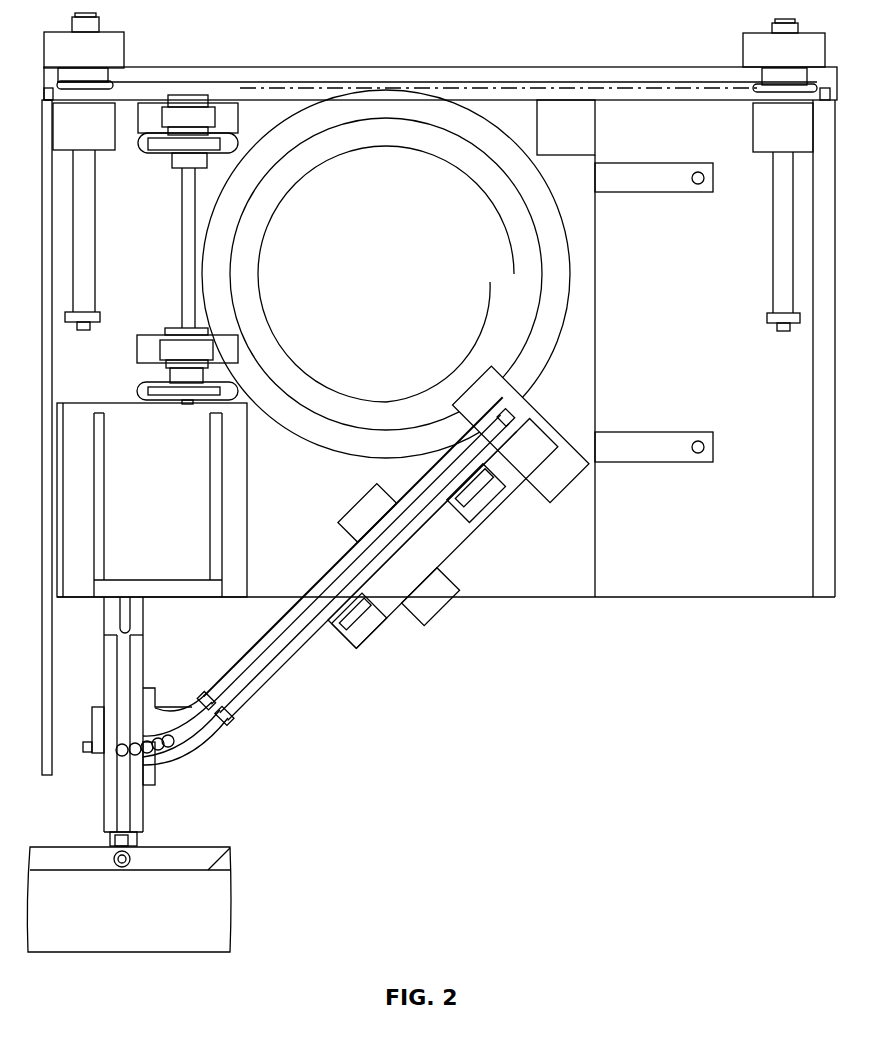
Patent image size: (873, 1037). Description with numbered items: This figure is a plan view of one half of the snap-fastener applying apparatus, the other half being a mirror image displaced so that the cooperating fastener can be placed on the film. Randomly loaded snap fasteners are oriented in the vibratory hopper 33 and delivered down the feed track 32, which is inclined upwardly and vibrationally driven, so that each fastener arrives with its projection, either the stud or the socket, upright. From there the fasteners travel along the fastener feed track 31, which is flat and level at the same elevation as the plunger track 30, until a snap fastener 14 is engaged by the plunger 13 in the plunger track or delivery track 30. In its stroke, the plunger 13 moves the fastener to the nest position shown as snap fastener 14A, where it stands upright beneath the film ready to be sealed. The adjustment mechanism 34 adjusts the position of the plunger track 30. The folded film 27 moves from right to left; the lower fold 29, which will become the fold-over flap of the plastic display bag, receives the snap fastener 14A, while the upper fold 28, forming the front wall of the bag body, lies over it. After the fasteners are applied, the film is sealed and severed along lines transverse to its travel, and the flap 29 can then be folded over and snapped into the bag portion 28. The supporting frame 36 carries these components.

The plunger 13 is at (122, 668).
The snap fastener 14 is at (116, 752).
The snap fastener position 14A is at (118, 851).
The folded film 27 is at (234, 895).
The upper fold 28 is at (236, 852).
The lower fold 29 is at (182, 846).
The plunger track 30 is at (128, 810).
The fastener feed track 31 is at (198, 735).
The feed track 32 is at (285, 650).
The vibratory hopper 33 is at (433, 96).
The adjustment mechanism 34 is at (220, 143).
The frame 36 is at (495, 597).